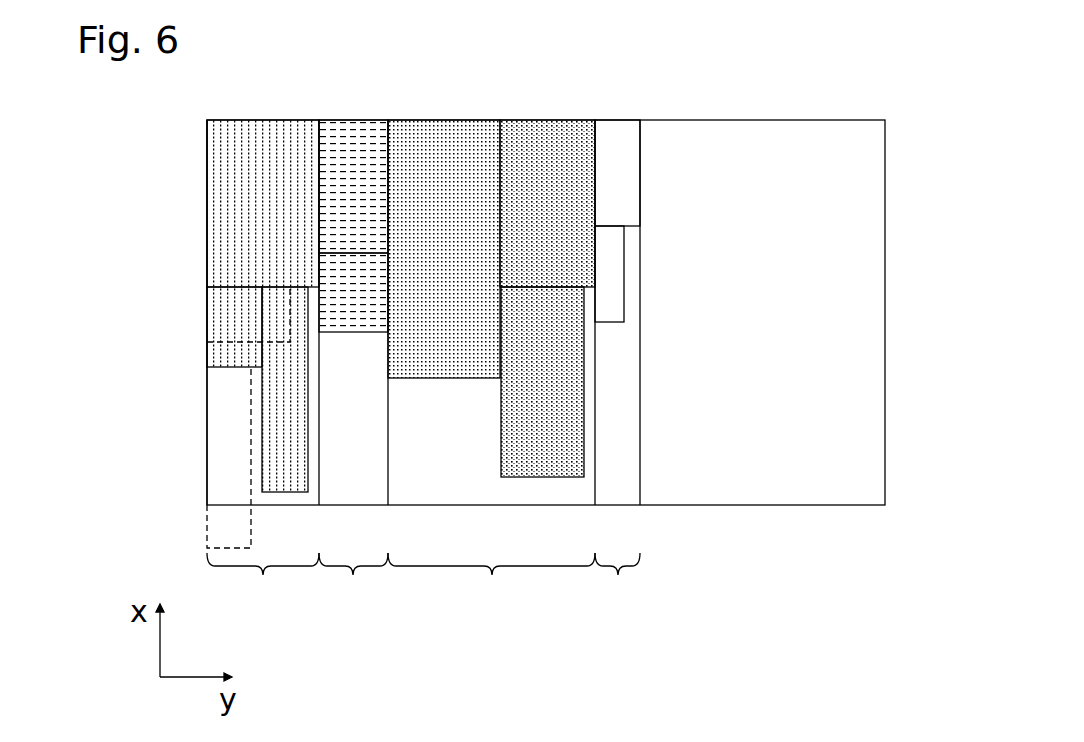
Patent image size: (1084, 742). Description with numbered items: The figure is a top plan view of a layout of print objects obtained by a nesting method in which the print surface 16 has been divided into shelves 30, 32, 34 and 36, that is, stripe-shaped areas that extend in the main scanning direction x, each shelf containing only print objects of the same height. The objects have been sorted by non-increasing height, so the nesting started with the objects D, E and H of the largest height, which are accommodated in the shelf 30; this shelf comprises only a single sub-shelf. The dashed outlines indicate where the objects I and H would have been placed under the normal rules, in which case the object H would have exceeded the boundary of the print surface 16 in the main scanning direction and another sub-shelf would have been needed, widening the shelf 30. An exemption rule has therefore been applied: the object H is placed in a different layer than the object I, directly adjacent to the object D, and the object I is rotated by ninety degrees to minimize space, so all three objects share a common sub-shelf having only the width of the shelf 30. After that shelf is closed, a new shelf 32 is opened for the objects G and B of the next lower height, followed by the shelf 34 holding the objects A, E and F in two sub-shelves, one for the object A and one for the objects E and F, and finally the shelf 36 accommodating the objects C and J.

The print surface 16 is at (785, 160).
The shelf 30 is at (263, 368).
The shelf 32 is at (353, 368).
The shelf 34 is at (491, 368).
The shelf 36 is at (618, 368).
The print object A is at (432, 160).
The print object B is at (352, 320).
The print object C is at (626, 183).
The print object D is at (256, 163).
The print object E is at (542, 160).
The print object F is at (513, 432).
The print object G is at (347, 160).
The print object H is at (278, 428).
The print object I is at (235, 327).
The print object J is at (613, 273).